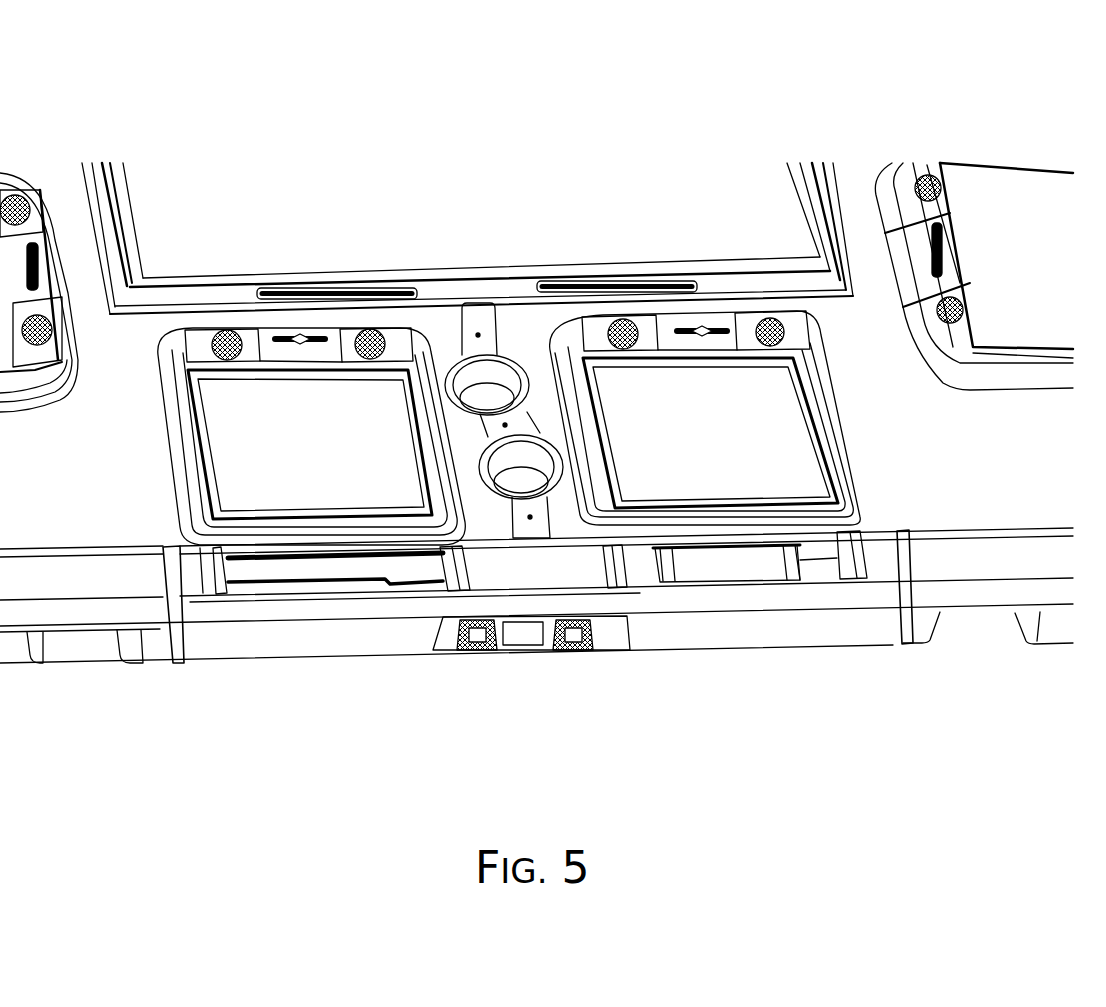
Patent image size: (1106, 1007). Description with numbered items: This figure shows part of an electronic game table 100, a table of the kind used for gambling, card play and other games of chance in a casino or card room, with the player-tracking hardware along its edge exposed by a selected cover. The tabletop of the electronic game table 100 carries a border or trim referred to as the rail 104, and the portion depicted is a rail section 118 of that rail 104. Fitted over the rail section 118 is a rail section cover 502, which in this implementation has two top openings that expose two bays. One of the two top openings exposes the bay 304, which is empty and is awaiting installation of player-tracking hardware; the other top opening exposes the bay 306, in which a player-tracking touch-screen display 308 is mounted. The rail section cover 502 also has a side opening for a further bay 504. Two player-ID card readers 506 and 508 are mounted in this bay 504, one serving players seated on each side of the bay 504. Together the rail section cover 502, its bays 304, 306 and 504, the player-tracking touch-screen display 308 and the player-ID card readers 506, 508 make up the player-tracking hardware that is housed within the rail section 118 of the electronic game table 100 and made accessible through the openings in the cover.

The electronic game table 100 is at (946, 64).
The rail 104 is at (102, 591).
The rail section 118 is at (907, 742).
The bay 304 is at (274, 575).
The bay 306 is at (812, 563).
The player-tracking touch-screen display 308 is at (746, 575).
The rail section cover 502 is at (551, 581).
The bay 504 is at (412, 677).
The player-ID card reader 506 is at (482, 652).
The player-ID card reader 508 is at (566, 652).